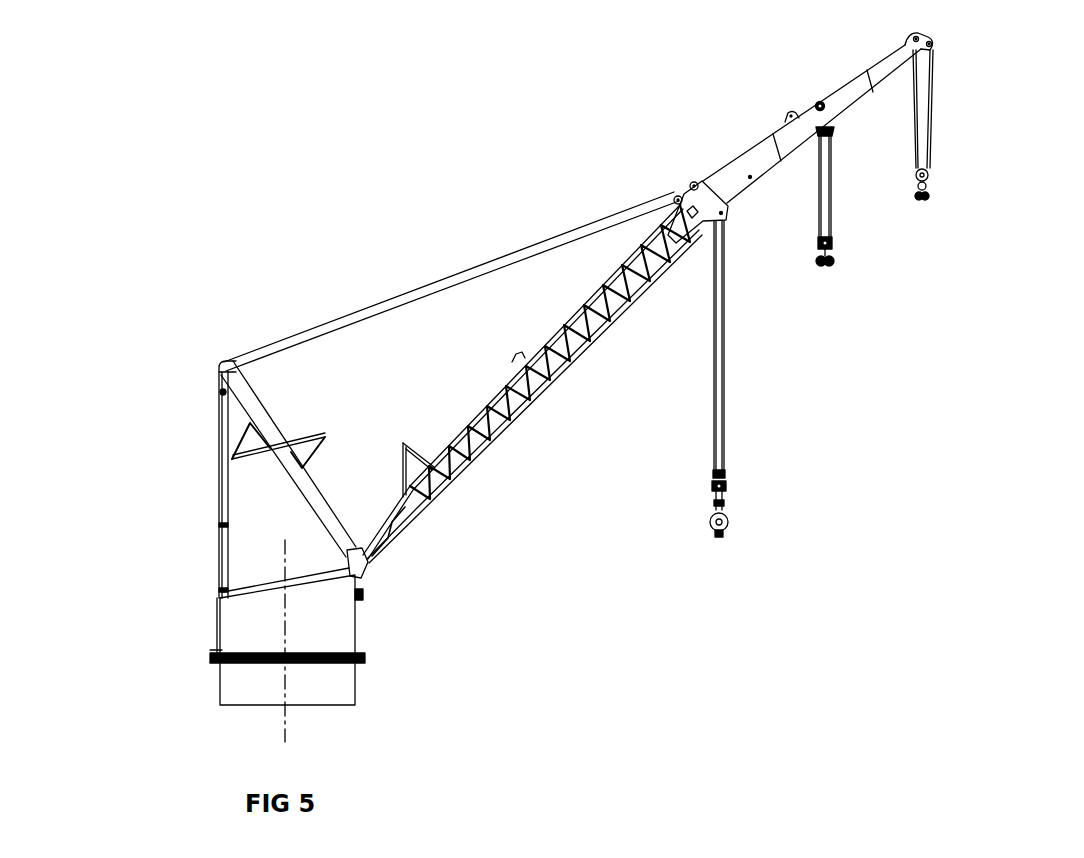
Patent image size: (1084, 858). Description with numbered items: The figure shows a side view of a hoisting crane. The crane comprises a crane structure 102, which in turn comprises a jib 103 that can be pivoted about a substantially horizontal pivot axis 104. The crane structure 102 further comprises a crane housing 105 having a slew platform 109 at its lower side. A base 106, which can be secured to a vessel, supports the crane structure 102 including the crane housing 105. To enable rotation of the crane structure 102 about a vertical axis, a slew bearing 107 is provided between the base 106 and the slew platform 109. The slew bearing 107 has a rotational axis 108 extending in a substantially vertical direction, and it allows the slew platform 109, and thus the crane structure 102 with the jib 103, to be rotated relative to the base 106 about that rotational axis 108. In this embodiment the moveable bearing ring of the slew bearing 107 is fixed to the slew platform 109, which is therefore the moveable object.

The crane structure 102 is at (200, 552).
The jib 103 is at (777, 253).
The pivot axis 104 is at (373, 570).
The crane housing 105 is at (372, 622).
The base 106 is at (377, 693).
The slew bearing 107 is at (387, 655).
The rotational axis 108 is at (270, 735).
The slew platform 109 is at (207, 649).